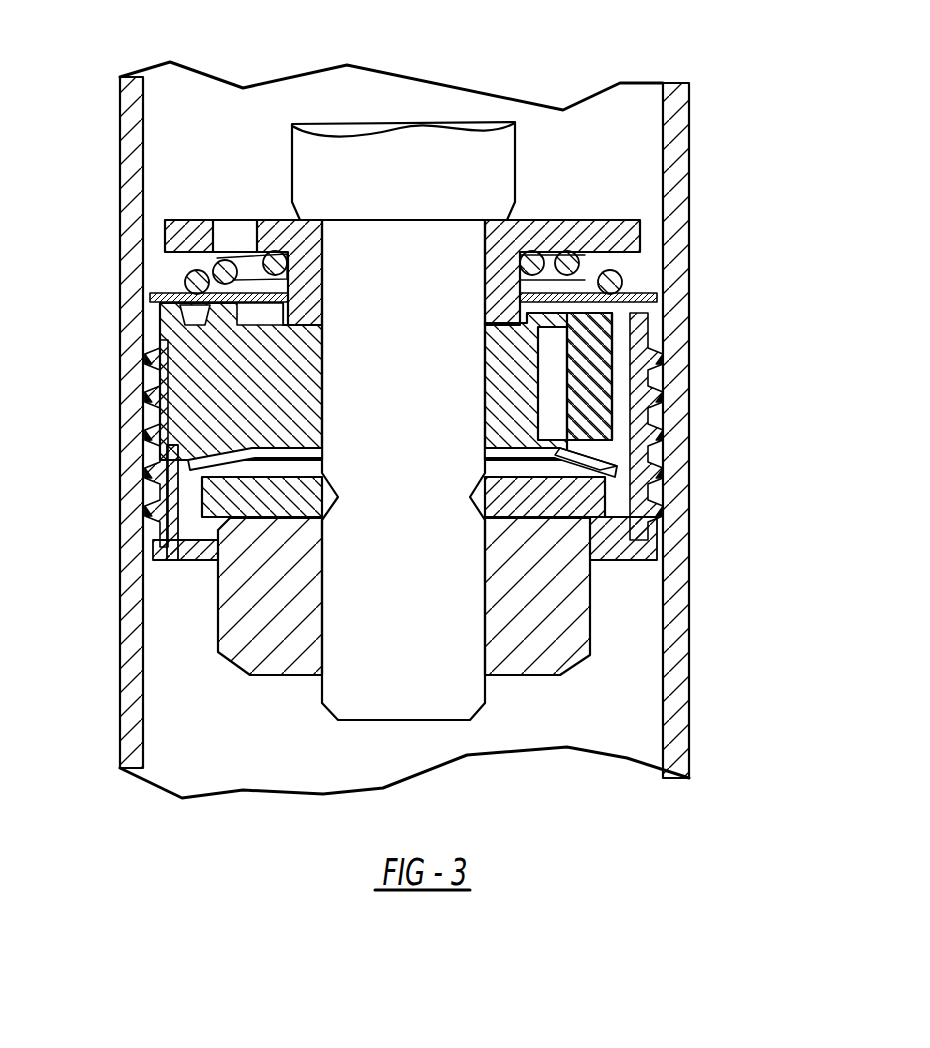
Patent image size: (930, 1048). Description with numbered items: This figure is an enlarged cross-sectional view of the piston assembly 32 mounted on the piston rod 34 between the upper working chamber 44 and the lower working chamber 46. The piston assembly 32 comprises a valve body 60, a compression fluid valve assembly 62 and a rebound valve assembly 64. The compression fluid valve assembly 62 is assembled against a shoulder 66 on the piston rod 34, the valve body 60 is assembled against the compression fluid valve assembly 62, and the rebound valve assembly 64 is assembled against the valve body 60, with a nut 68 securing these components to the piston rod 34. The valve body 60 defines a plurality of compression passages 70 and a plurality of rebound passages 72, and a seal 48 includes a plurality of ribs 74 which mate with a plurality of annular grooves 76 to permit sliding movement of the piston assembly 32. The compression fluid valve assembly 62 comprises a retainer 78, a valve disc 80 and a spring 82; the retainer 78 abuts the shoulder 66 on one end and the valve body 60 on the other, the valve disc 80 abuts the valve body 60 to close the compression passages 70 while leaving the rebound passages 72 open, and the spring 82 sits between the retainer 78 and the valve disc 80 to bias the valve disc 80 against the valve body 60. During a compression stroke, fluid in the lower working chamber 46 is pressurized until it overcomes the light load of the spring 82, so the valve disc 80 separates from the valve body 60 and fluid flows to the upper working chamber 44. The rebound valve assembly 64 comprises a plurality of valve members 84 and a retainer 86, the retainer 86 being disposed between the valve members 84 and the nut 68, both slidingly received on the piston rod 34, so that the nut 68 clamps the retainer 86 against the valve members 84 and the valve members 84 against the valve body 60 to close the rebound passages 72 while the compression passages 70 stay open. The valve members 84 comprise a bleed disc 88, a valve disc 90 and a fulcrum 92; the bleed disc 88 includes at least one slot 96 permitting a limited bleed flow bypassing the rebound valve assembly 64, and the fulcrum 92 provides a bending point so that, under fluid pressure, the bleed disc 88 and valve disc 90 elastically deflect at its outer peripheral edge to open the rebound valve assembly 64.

The piston assembly 32 is at (603, 122).
The piston rod 34 is at (385, 177).
The upper working chamber 44 is at (181, 121).
The lower working chamber 46 is at (590, 721).
The seal 48 is at (145, 350).
The valve body 60 is at (220, 377).
The compression fluid valve assembly 62 is at (585, 187).
The rebound valve assembly 64 is at (608, 583).
The shoulder 66 is at (363, 225).
The nut 68 is at (250, 660).
The compression passages 70 is at (618, 377).
The rebound passages 72 is at (555, 353).
The ribs 74 is at (656, 480).
The annular grooves 76 is at (150, 425).
The retainer 78 is at (197, 232).
The valve disc 80 is at (148, 295).
The spring 82 is at (185, 283).
The valve members 84 is at (612, 465).
The retainer 86 is at (222, 510).
The bleed disc 88 is at (612, 416).
The valve disc 90 is at (598, 418).
The fulcrum 92 is at (262, 478).
The slot 96 is at (190, 457).